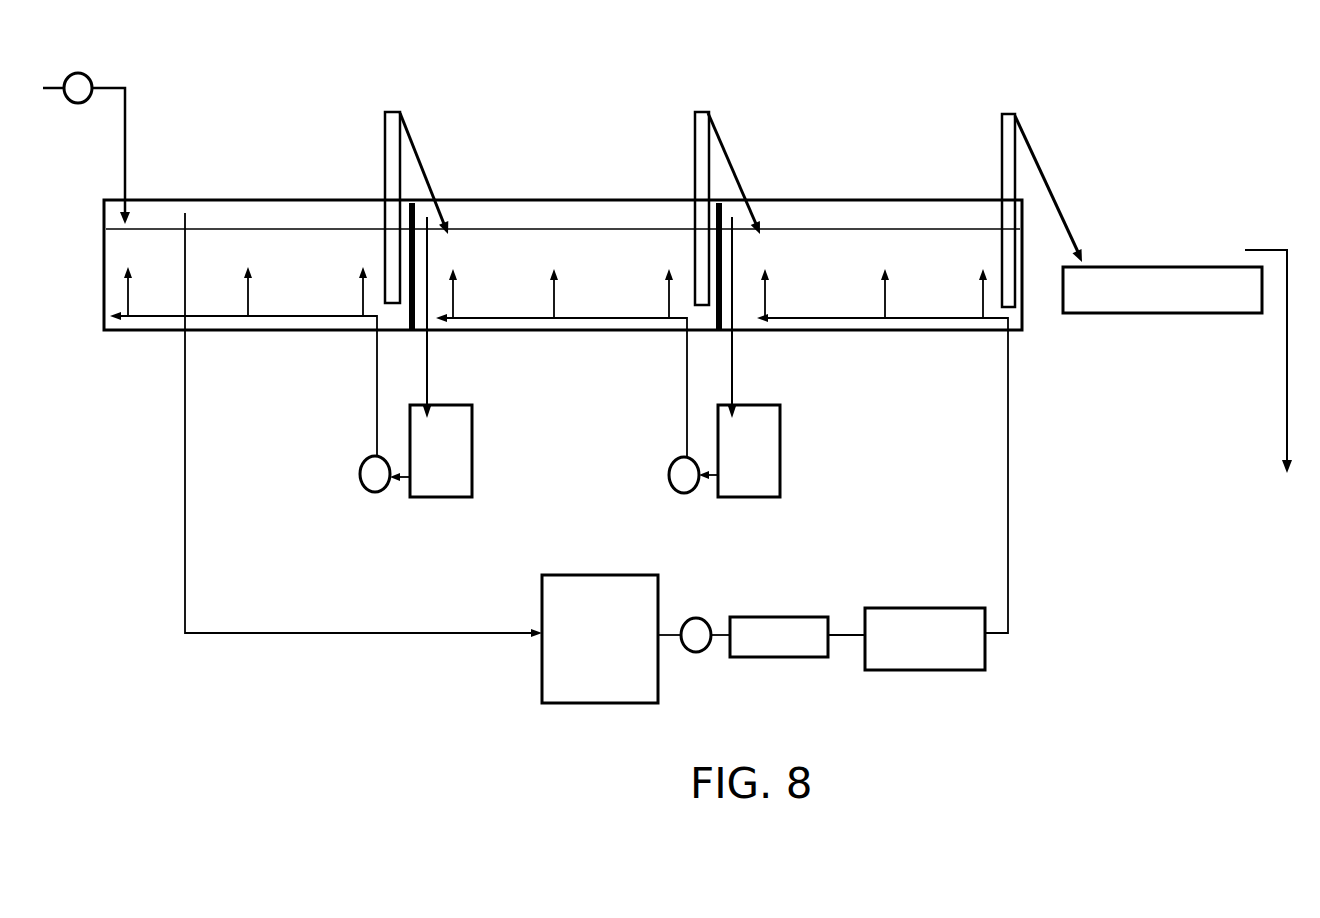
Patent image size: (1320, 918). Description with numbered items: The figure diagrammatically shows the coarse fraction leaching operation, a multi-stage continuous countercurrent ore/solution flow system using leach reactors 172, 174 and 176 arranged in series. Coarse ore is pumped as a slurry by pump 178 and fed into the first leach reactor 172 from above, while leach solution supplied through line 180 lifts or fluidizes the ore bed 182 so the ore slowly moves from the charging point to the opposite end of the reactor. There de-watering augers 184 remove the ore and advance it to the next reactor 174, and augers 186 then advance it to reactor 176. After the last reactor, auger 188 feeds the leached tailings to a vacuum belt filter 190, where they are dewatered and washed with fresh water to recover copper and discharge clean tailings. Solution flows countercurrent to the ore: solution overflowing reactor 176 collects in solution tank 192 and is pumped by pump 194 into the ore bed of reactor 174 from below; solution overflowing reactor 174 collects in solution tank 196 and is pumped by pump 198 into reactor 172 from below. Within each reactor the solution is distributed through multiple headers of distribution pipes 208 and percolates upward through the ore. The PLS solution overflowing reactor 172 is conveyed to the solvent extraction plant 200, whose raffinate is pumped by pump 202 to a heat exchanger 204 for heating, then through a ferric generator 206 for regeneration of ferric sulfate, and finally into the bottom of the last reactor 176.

The first leach reactor 172 is at (163, 327).
The second leach reactor 174 is at (621, 326).
The third leach reactor 176 is at (917, 326).
The pump 178 is at (79, 75).
The line 180 is at (127, 136).
The ore bed 182 is at (116, 246).
The de-watering augers 184 is at (401, 112).
The augers 186 is at (706, 115).
The auger 188 is at (1001, 122).
The vacuum belt filter 190 is at (1152, 275).
The solution tank 192 is at (768, 452).
The pump 194 is at (678, 478).
The solution tank 196 is at (462, 452).
The pump 198 is at (370, 474).
The solvent extraction plant 200 is at (600, 698).
The pump 202 is at (695, 620).
The heat exchanger 204 is at (788, 625).
The ferric generator 206 is at (915, 663).
The distribution pipes 208 is at (131, 297).